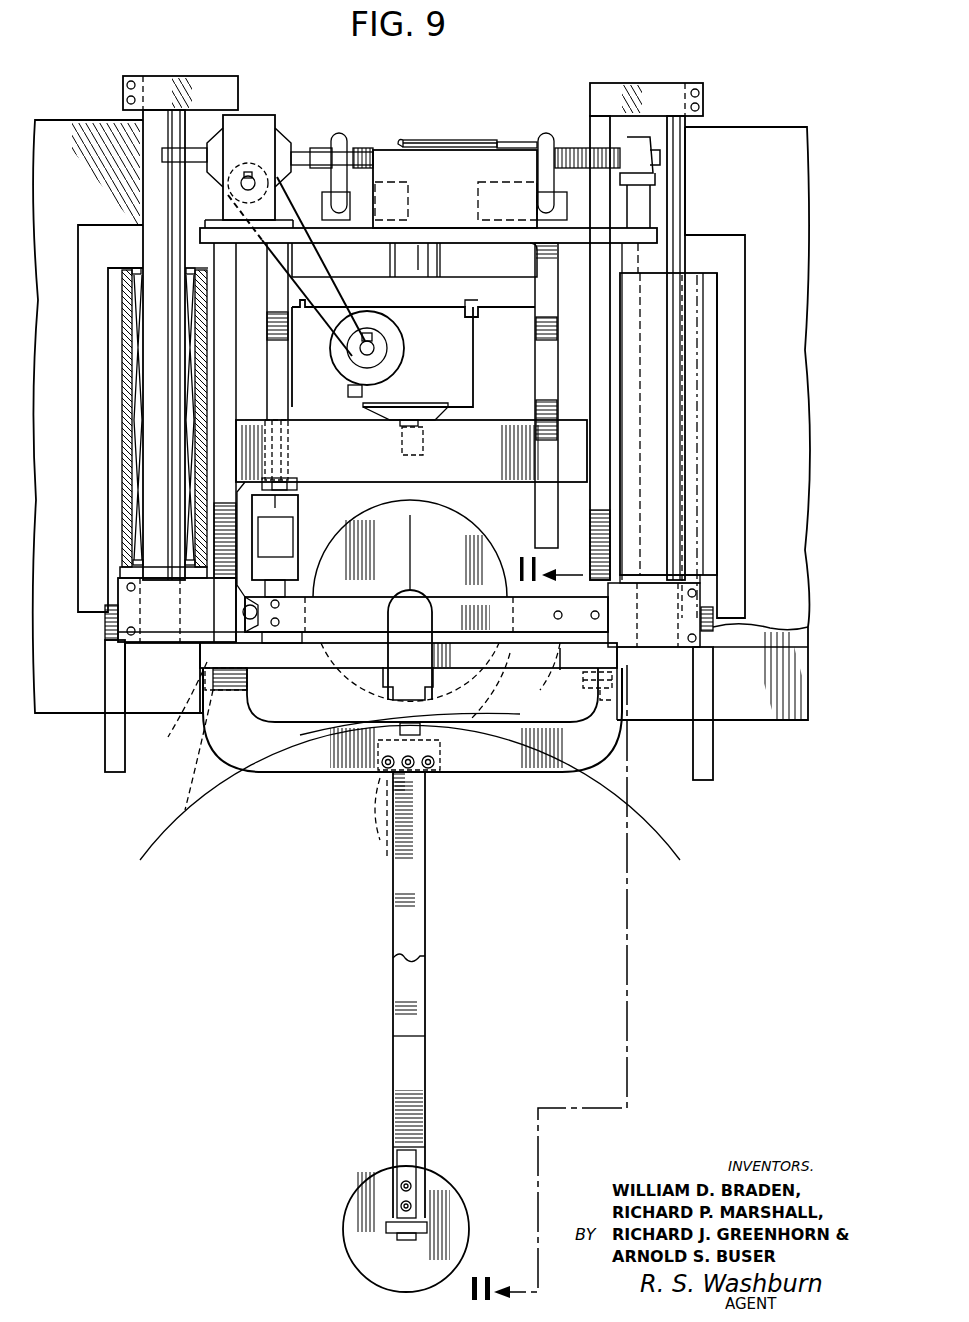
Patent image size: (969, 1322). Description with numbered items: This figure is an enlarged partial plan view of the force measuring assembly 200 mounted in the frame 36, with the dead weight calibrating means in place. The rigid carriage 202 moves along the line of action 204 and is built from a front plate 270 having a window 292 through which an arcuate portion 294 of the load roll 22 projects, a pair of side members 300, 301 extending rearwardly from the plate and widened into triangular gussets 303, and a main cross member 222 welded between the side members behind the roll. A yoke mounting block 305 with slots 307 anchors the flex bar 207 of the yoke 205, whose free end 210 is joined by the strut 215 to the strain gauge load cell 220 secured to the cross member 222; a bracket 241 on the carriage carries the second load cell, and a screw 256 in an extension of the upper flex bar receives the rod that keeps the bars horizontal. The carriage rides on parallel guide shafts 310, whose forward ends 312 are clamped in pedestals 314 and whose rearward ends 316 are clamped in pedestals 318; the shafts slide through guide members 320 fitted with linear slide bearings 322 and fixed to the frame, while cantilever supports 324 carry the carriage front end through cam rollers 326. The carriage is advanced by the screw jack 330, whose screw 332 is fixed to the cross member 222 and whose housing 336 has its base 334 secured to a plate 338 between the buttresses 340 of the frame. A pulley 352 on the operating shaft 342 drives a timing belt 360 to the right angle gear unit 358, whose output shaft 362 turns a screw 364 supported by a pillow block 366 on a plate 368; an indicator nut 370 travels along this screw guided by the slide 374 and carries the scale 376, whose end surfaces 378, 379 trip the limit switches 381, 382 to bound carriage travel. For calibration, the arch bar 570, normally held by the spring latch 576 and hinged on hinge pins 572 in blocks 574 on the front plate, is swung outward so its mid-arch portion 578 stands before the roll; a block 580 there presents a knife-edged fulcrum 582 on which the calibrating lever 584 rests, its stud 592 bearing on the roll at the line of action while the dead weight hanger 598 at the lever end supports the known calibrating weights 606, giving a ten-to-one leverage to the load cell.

The load roll 22 is at (352, 702).
The frame 36 is at (810, 450).
The force measuring assembly 200 is at (702, 222).
The carriage 202 is at (578, 456).
The direction line of action 204 is at (415, 536).
The yoke 205 is at (322, 648).
The flex bar 207 is at (372, 597).
The free end of flex bar 210 is at (302, 596).
The strut 215 is at (247, 682).
The strain gauge load cell 220 is at (300, 512).
The main cross member 222 is at (477, 472).
The bracket 241 is at (432, 628).
The screw 256 is at (264, 642).
The front plate 270 is at (545, 662).
The window 292 is at (505, 670).
The arcuate portion of the load roll 294 is at (442, 746).
The side member 300 is at (603, 483).
The side member 301 is at (215, 245).
The triangular gussets 303 is at (222, 566).
The yoke mounting block 305 is at (556, 648).
The slots 307 is at (620, 626).
The guide shafts 310 is at (160, 189).
The forward ends of guide shafts 312 is at (148, 652).
The pedestals 314 is at (116, 628).
The rearward ends of guide shafts 316 is at (150, 78).
The pedestals 318 is at (125, 88).
The guide members 320 is at (118, 353).
The linear slide bearings 322 is at (135, 300).
The cantilever support 324 is at (107, 745).
The cam rollers 326 is at (120, 648).
The screw jack 330 is at (452, 363).
The screw 332 is at (420, 422).
The base of jack housing 334 is at (470, 310).
The jack housing 336 is at (415, 397).
The plate 338 is at (500, 283).
The buttresses 340 is at (282, 335).
The operating shaft 342 is at (374, 348).
The pulley 352 is at (360, 370).
The right angle gear unit 358 is at (253, 118).
The timing belt 360 is at (302, 150).
The output shaft 362 is at (338, 132).
The screw 364 is at (345, 145).
The pillow block 366 is at (646, 143).
The plate 368 is at (660, 242).
The indicator nut 370 is at (500, 142).
The slide 374 is at (455, 140).
The scale 376 is at (440, 140).
The end surface of scale 378 is at (404, 140).
The end surface of scale 379 is at (546, 140).
The limit switch 381 is at (346, 186).
The limit switch 382 is at (546, 206).
The arch bar 570 is at (440, 776).
The hinge pins 572 is at (645, 690).
The blocks 574 is at (645, 712).
The spring latch 576 is at (392, 732).
The mid-arch portion 578 is at (422, 790).
The block 580 is at (368, 820).
The knife-edged fulcrum 582 is at (364, 809).
The calibrating lever 584 is at (432, 953).
The stud or pressure pad 592 is at (446, 716).
The dead weight hanger 598 is at (386, 1228).
The calibrating weights 606 is at (464, 1212).